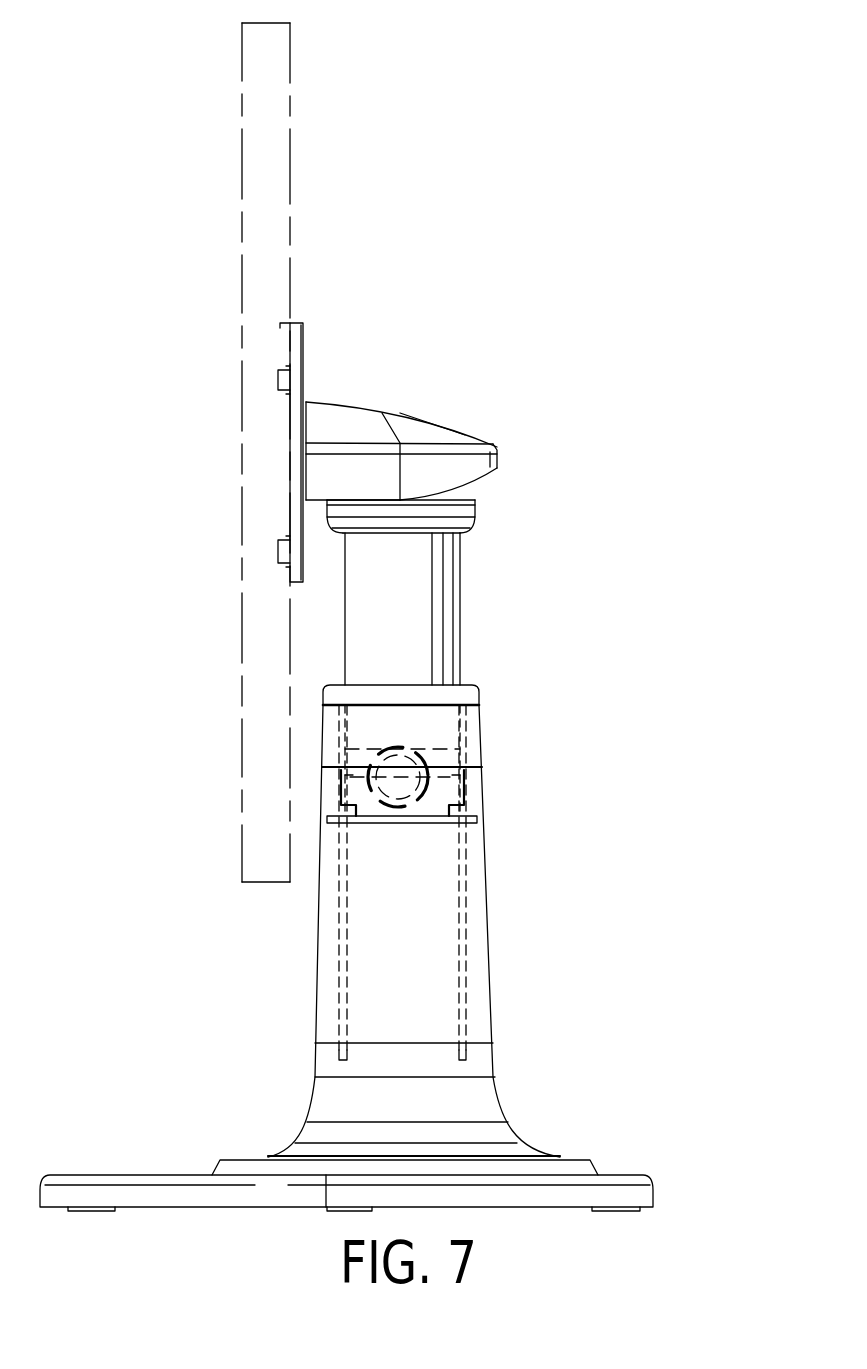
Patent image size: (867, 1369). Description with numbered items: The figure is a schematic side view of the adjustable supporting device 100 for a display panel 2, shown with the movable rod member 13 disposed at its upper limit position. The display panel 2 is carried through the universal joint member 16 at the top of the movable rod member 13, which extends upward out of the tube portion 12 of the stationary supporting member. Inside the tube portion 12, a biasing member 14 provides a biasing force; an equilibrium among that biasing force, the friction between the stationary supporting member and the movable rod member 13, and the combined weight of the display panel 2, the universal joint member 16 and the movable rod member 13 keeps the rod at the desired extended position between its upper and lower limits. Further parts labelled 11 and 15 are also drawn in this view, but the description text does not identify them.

The display panel 2 is at (270, 68).
The adjustable supporting device 100 is at (396, 767).
The base 11 is at (637, 1178).
The tube portion 12 is at (490, 983).
The movable rod member 13 is at (407, 610).
The biasing member 14 is at (433, 760).
The bracket 15 is at (490, 820).
The universal joint member 16 is at (500, 437).